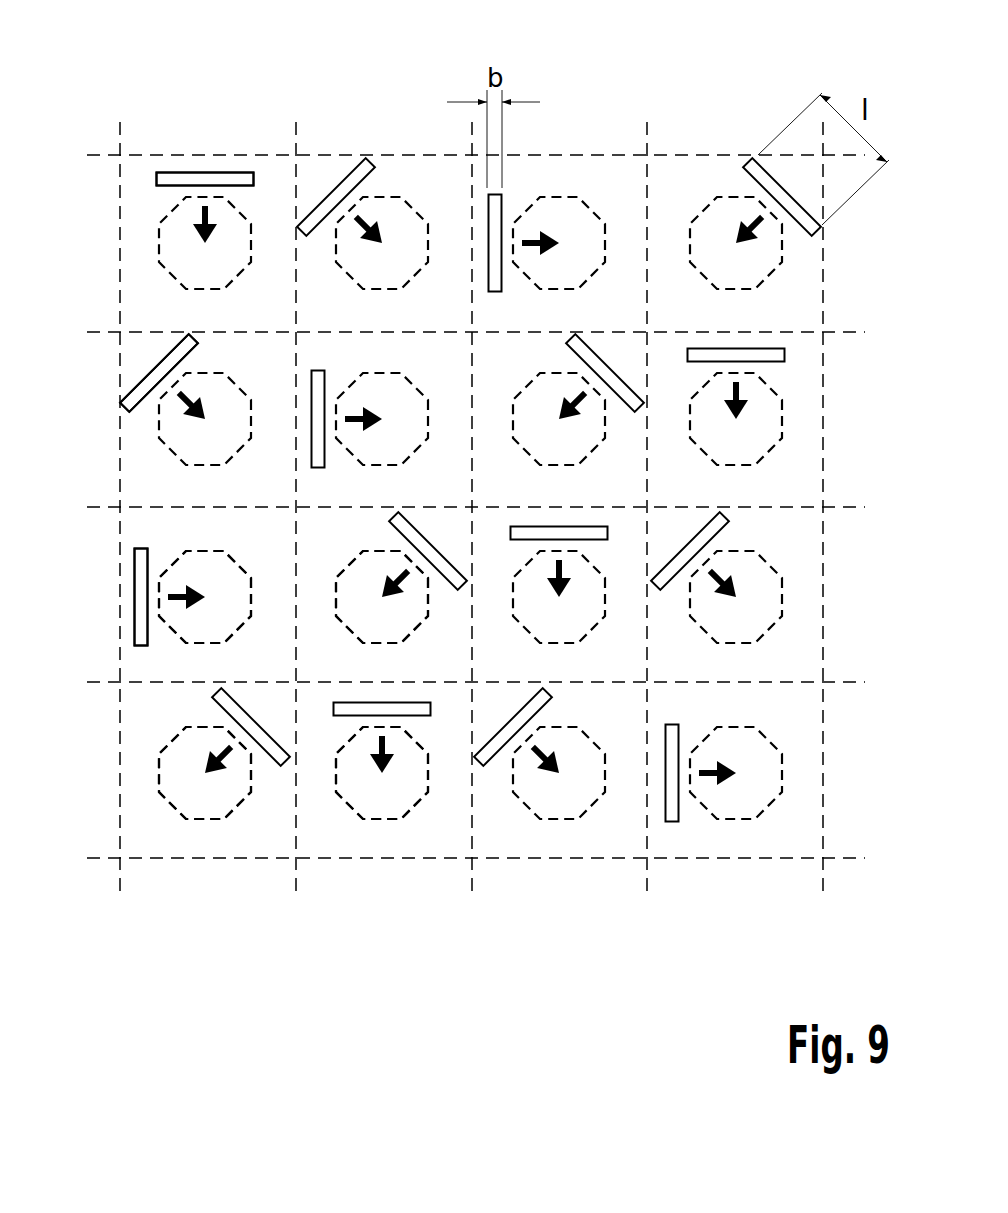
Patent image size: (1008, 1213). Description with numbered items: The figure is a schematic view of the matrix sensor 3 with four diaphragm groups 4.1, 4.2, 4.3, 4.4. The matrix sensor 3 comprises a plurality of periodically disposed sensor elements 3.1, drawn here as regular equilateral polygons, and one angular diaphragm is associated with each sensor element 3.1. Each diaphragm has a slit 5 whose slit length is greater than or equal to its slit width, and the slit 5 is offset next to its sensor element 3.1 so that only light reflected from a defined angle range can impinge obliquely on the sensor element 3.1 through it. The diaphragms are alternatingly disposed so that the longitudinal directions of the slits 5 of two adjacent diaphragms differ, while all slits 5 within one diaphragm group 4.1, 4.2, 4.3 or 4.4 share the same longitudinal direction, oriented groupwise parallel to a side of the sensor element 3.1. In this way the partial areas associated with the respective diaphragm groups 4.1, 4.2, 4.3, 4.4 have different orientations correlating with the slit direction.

The matrix sensor 3 is at (86, 109).
The sensor element 3.1 is at (343, 620).
The diaphragm group 4.1 is at (667, 655).
The diaphragm group 4.2 is at (628, 533).
The diaphragm group 4.3 is at (499, 475).
The diaphragm group 4.4 is at (272, 563).
The slit 5 is at (208, 178).